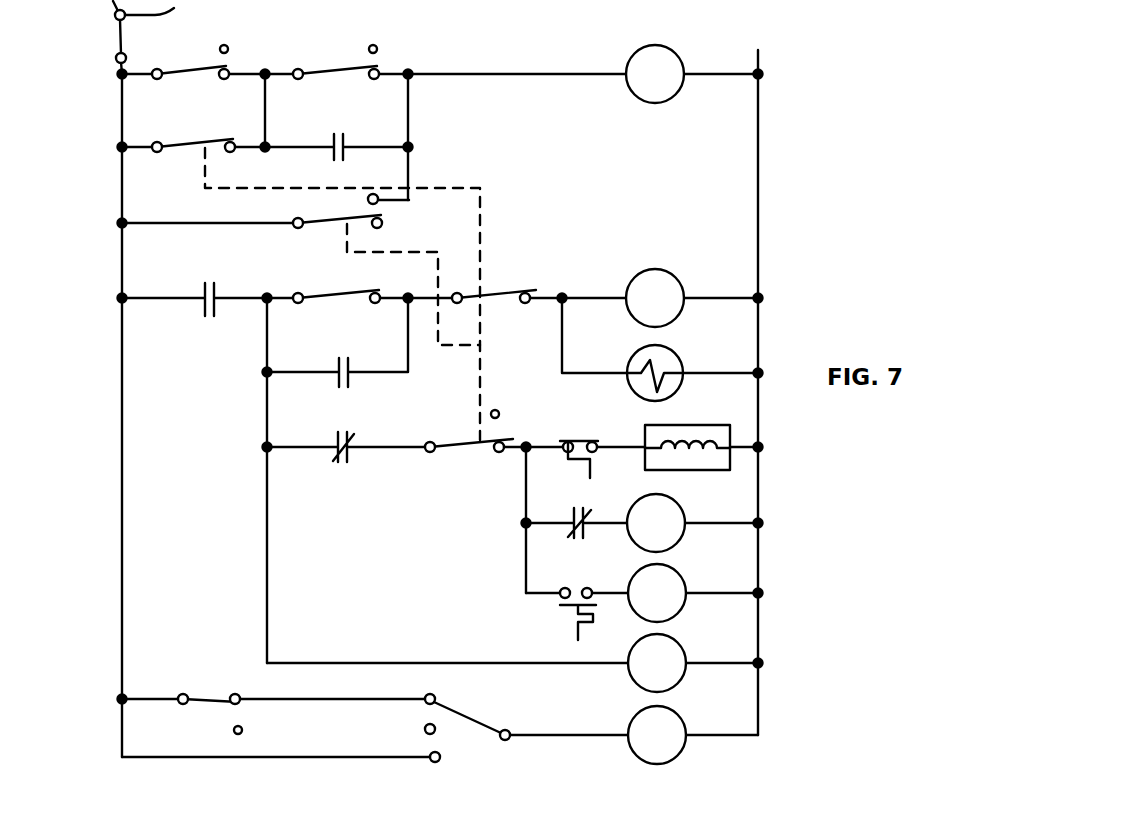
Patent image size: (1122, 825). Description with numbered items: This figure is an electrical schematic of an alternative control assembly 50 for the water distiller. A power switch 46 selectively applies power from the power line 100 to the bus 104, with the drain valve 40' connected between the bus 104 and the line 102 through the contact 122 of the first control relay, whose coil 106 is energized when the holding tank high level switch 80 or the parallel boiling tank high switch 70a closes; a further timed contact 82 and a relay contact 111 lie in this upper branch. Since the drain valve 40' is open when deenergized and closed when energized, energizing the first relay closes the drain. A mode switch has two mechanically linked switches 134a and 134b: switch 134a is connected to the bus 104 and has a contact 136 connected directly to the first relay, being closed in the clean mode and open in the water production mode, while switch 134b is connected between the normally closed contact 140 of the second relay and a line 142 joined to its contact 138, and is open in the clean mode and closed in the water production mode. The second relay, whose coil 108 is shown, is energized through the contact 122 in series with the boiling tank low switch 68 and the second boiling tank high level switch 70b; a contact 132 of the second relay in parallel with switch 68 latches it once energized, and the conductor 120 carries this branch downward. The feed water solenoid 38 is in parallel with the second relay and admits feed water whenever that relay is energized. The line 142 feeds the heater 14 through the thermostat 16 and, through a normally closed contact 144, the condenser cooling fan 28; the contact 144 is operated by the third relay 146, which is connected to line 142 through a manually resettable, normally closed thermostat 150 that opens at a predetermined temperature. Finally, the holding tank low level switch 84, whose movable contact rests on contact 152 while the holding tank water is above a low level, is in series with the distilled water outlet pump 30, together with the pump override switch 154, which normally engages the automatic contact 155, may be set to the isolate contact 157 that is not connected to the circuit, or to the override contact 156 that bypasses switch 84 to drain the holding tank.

The power line 100 is at (176, 17).
The power switch 46 is at (116, 30).
The holding tank high level switch 80 is at (197, 78).
The HTD contact 82 is at (332, 78).
The boiling tank high switch 70a is at (190, 152).
The bus 104 is at (122, 176).
The line 102 is at (758, 60).
The relay CR1 coil 106 is at (676, 58).
The control assembly 50 is at (481, 60).
The CR1 contact 111 is at (333, 155).
The switch 134a is at (349, 218).
The contact 136 is at (342, 294).
The contact of CR1 122 is at (204, 302).
The boiling tank low switch 68 is at (321, 302).
The second boiling tank high level switch 70b is at (512, 292).
The relay CR2 coil 108 is at (671, 280).
The feed water solenoid 38 is at (676, 353).
The conductor 120 is at (267, 424).
The contact of CR2 132 is at (339, 380).
The normally closed contact of CR2 140 is at (336, 458).
The switch 134b is at (478, 452).
The contact of switch 134b 138 is at (501, 453).
The line 142 is at (526, 518).
The thermostat 16 is at (568, 439).
The heater 14 is at (647, 425).
The normally closed contact 144 is at (580, 539).
The condenser cooling fan 28 is at (677, 501).
The relay 146 is at (676, 574).
The manually resettable thermostat 150 is at (561, 627).
The drain valve 40' is at (510, 654).
The distilled water outlet pump 30 is at (677, 708).
The holding tank low level switch 84 is at (211, 705).
The contact 152 is at (238, 702).
The contact 155 is at (450, 699).
The contact 157 is at (427, 726).
The contact 156 is at (432, 757).
The pump override switch 154 is at (469, 736).